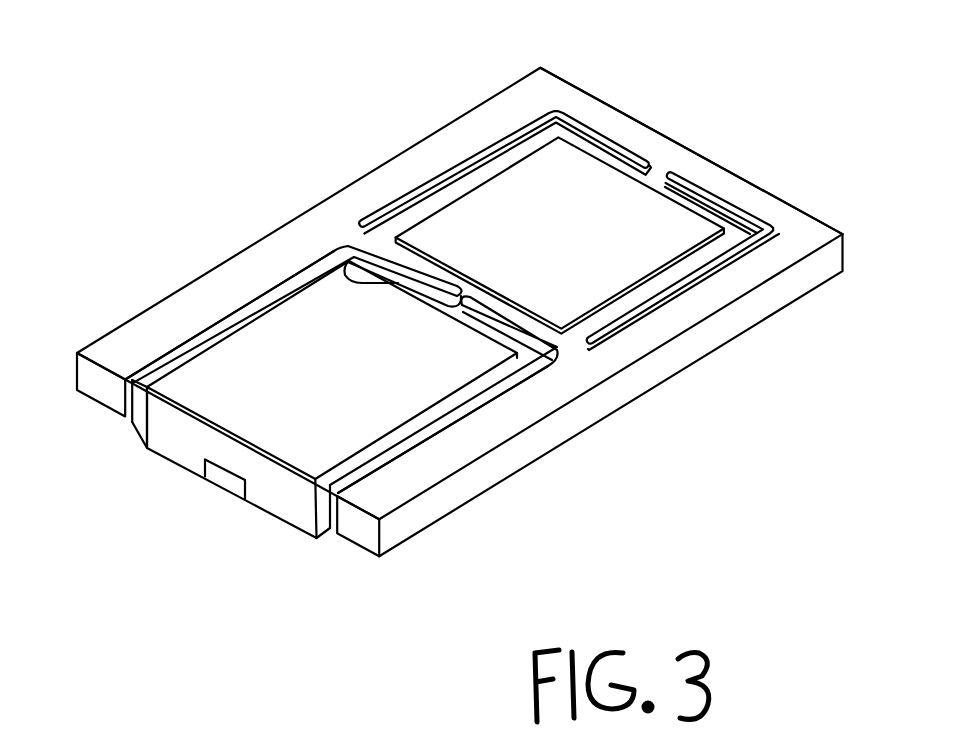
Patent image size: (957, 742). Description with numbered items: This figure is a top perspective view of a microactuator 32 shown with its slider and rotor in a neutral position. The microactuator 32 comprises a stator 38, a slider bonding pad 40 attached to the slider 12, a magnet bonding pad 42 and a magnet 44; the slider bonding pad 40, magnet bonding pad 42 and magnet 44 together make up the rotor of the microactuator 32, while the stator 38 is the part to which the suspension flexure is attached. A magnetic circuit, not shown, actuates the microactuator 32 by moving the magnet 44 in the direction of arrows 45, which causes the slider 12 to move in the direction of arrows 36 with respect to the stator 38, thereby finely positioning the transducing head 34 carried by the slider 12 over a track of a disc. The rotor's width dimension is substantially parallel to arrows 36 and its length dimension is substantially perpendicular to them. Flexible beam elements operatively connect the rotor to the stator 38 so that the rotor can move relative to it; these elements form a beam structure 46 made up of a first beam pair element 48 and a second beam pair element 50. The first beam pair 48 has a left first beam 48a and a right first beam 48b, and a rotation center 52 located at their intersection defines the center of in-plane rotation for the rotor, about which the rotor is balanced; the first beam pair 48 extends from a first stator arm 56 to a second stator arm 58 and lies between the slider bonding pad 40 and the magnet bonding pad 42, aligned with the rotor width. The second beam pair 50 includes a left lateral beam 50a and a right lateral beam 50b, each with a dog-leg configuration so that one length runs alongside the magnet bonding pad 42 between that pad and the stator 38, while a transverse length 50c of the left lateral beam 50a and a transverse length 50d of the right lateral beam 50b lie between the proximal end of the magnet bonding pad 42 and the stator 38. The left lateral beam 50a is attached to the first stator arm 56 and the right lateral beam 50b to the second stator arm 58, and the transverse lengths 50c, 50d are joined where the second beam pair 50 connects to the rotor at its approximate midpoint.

The slider 12 is at (293, 399).
The microactuator 32 is at (405, 105).
The transducing head 34 is at (223, 478).
The arrows (direction of slider movement) 36 is at (205, 568).
The stator 38 is at (584, 373).
The slider bonding pad 40 is at (157, 373).
The magnet bonding pad 42 is at (700, 207).
The magnet 44 is at (702, 236).
The arrows (direction of magnet movement) 45 is at (528, 209).
The beam structure 46 is at (405, 188).
The first beam pair element 48 is at (364, 354).
The left first beam 48a is at (342, 245).
The right first beam 48b is at (495, 322).
The second beam pair element 50 is at (589, 211).
The left lateral beam 50a is at (513, 135).
The right lateral beam 50b is at (705, 272).
The transverse length of left lateral beam 50c is at (633, 150).
The transverse length of right lateral beam 50d is at (700, 170).
The rotation center 52 is at (455, 298).
The first stator arm 56 is at (197, 297).
The second stator arm 58 is at (363, 523).